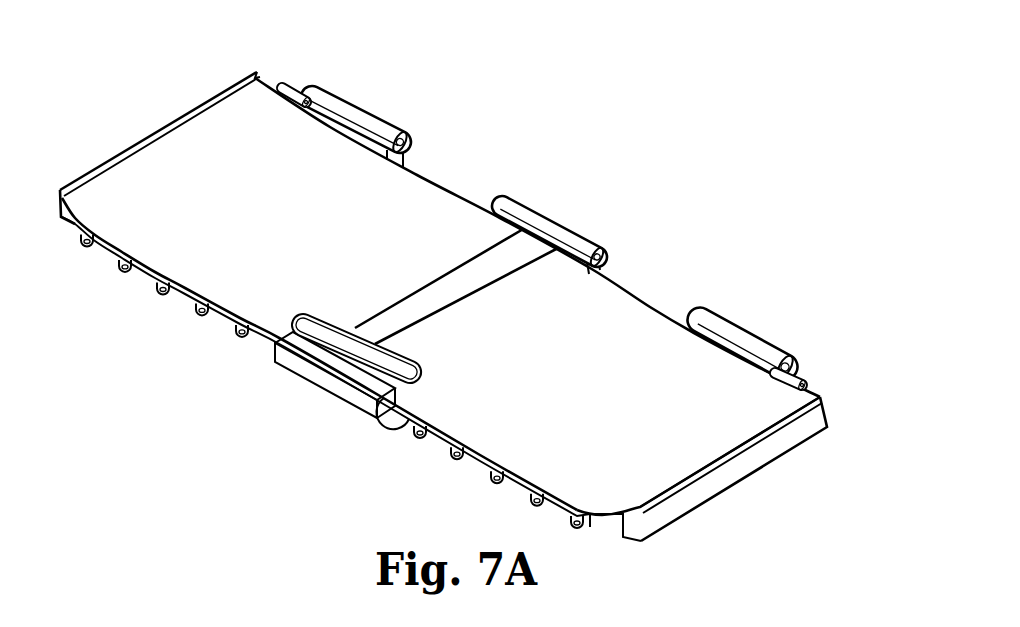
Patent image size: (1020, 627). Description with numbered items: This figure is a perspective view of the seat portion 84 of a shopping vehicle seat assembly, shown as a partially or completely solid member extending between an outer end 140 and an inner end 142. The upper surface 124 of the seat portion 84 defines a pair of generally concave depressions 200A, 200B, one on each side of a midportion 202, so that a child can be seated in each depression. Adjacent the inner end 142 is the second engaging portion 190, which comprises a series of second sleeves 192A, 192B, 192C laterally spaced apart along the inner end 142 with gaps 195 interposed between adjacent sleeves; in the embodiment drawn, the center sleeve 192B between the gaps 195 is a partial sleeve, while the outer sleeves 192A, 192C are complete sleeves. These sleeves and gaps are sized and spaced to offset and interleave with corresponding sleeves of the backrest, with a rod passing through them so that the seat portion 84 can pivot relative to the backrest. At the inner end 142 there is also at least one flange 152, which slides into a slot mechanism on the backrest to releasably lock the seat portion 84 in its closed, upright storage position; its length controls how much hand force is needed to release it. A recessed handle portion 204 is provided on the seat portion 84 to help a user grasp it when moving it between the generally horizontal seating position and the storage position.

The seat portion 84 is at (154, 127).
The upper surface 124 is at (197, 273).
The outer end 140 is at (124, 270).
The inner end 142 is at (247, 70).
The flange 152 is at (290, 76).
The second engaging portion 190 is at (403, 120).
The second sleeve 192A is at (360, 100).
The center sleeve 192B is at (563, 217).
The second sleeve 192C is at (750, 342).
The gap 195 is at (443, 190).
The concave depression 200A is at (321, 216).
The concave depression 200B is at (644, 413).
The midportion 202 is at (487, 270).
The recessed handle portion 204 is at (400, 421).